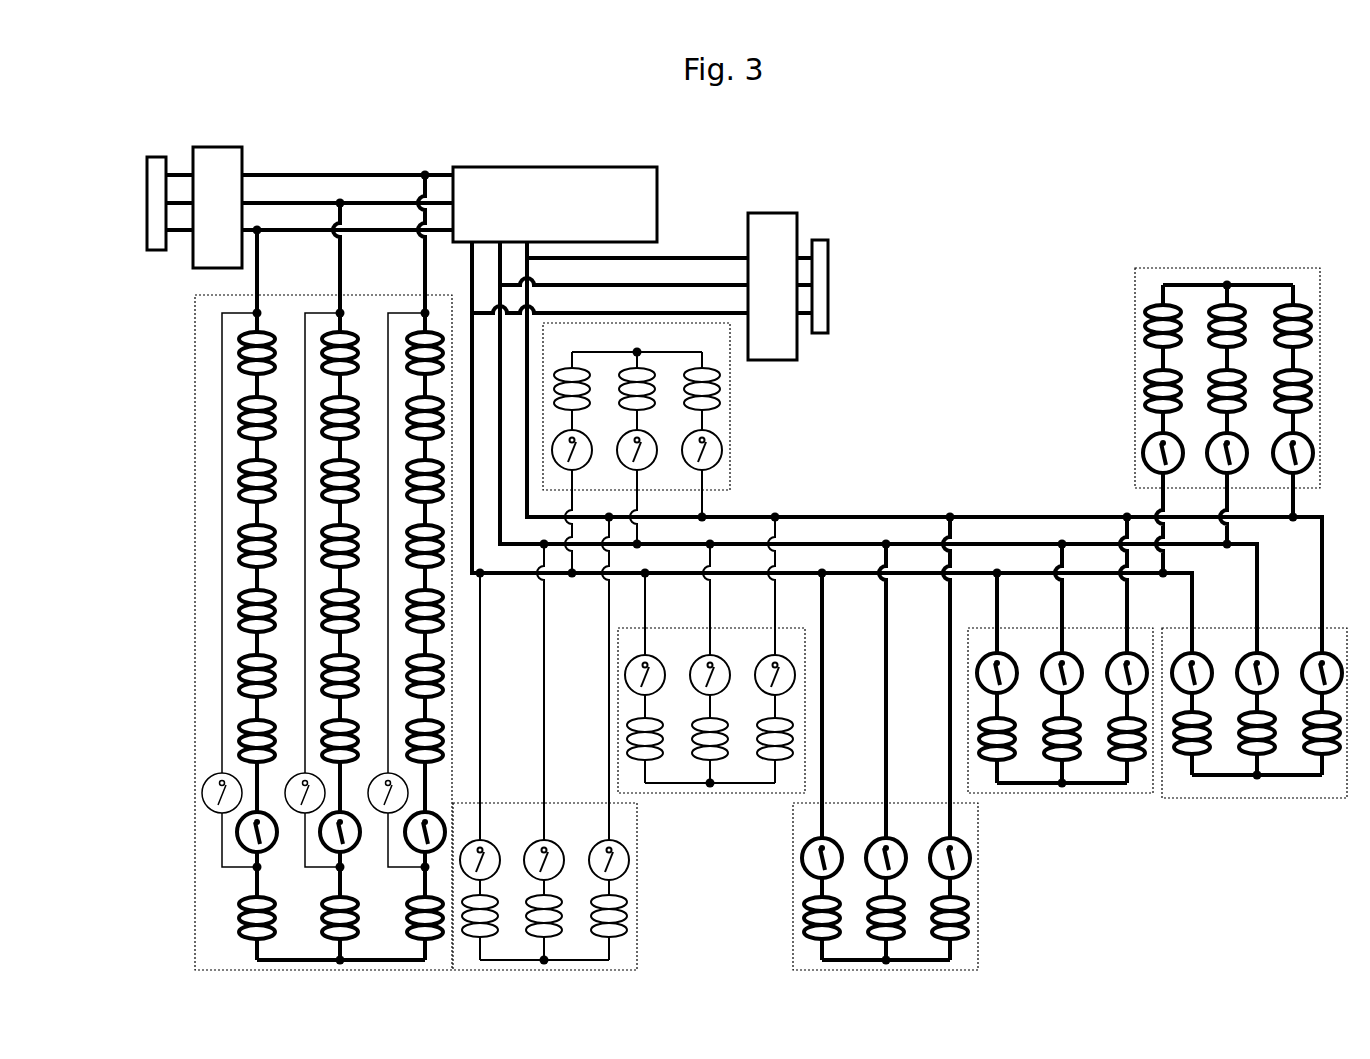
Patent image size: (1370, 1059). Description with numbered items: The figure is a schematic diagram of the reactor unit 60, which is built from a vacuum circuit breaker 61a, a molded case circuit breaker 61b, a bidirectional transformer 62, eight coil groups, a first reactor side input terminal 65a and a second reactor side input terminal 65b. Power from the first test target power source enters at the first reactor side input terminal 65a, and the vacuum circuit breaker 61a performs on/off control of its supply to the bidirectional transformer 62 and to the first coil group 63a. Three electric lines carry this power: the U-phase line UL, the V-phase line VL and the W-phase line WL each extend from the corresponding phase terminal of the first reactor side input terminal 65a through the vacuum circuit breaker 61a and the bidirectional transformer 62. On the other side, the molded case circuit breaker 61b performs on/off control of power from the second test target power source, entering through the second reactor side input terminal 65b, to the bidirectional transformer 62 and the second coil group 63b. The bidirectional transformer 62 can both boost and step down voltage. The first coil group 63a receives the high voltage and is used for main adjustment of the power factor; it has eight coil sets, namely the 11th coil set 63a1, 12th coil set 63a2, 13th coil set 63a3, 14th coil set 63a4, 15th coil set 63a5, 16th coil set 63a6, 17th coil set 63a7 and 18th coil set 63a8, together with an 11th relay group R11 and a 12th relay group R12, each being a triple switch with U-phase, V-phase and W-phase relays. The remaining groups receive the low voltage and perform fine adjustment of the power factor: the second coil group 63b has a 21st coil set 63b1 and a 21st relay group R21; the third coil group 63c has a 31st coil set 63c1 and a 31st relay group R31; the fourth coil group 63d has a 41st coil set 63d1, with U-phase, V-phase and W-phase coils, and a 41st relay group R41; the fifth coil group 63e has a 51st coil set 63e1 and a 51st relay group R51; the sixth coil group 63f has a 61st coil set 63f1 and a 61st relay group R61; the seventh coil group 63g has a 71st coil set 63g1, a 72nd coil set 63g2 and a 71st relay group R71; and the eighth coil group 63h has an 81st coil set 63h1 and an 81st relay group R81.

The reactor unit 60 is at (1025, 222).
The vacuum circuit breaker 61a is at (242, 152).
The molded case circuit breaker 61b is at (796, 216).
The bidirectional transformer 62 is at (657, 173).
The first reactor side input terminal 65a is at (147, 253).
The second reactor side input terminal 65b is at (828, 256).
The U-phase line UL is at (405, 173).
The V-phase line VL is at (370, 207).
The W-phase line WL is at (298, 234).
The first coil group 63a is at (195, 690).
The 11th coil set 63a1 is at (395, 933).
The 12th coil set 63a2 is at (403, 725).
The 13th coil set 63a3 is at (403, 660).
The 14th coil set 63a4 is at (403, 595).
The 15th coil set 63a5 is at (403, 530).
The 16th coil set 63a6 is at (403, 465).
The 17th coil set 63a7 is at (403, 402).
The 18th coil set 63a8 is at (403, 337).
The 11th relay group R11 is at (405, 848).
The 12th relay group R12 is at (367, 775).
The second coil group 63b is at (562, 802).
The 21st coil set 63b1 is at (490, 945).
The 21st relay group R21 is at (500, 878).
The third coil group 63c is at (730, 455).
The 31st coil set 63c1 is at (593, 397).
The 31st relay group R31 is at (592, 472).
The fourth coil group 63d is at (747, 797).
The 41st coil set 63d1 is at (745, 768).
The 41st relay group R41 is at (755, 653).
The fifth coil group 63e is at (902, 802).
The 51st coil set 63e1 is at (843, 943).
The 51st relay group R51 is at (843, 878).
The sixth coil group 63f is at (1123, 798).
The 61st coil set 63f1 is at (1097, 765).
The 61st relay group R61 is at (1105, 653).
The seventh coil group 63g is at (1192, 268).
The 71st coil set 63g1 is at (1273, 302).
The 72nd coil set 63g2 is at (1270, 378).
The 71st relay group R71 is at (1270, 433).
The eighth coil group 63h is at (1300, 798).
The 81st coil set 63h1 is at (1292, 758).
The 81st relay group R81 is at (1302, 655).